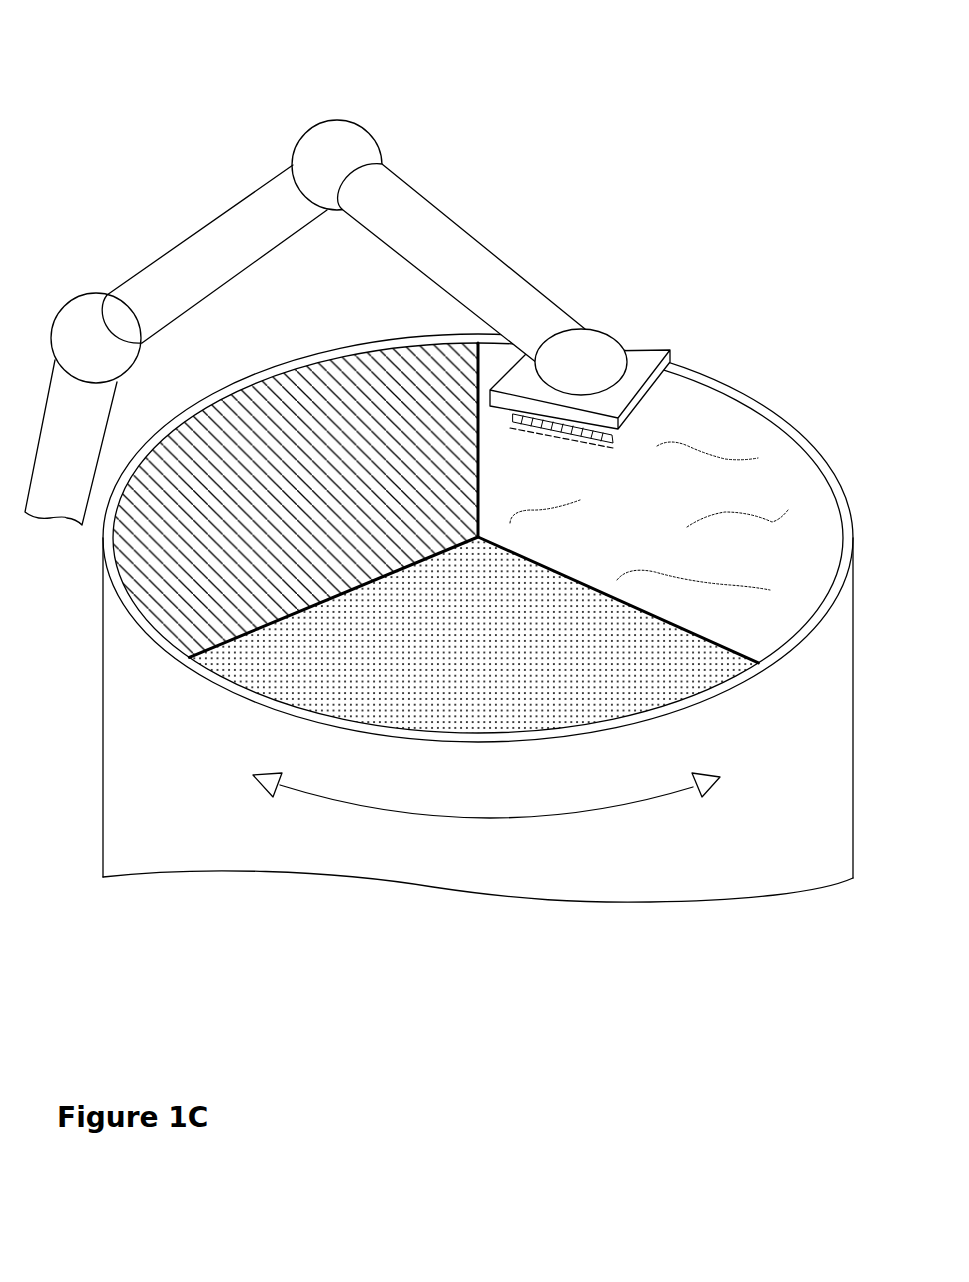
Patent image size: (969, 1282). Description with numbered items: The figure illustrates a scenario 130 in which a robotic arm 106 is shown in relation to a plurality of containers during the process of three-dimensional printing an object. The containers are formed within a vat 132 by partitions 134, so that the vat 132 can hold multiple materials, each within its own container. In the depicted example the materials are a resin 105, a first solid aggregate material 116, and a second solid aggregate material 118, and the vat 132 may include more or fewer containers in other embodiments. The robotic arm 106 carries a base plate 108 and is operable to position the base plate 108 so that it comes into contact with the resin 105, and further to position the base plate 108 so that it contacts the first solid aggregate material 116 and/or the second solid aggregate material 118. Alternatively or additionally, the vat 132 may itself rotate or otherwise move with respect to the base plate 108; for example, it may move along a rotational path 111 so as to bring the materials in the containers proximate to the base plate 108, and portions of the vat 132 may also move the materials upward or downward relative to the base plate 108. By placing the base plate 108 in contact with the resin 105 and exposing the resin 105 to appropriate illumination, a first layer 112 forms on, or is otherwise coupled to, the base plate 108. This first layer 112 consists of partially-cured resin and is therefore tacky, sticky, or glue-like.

The scenario 130 is at (491, 98).
The robotic arm 106 is at (152, 256).
The base plate 108 is at (661, 344).
The first layer 112 is at (557, 431).
The second solid aggregate material 118 is at (338, 364).
The first solid aggregate material 116 is at (568, 691).
The resin 105 is at (757, 436).
The partitions 134 is at (737, 653).
The rotational path 111 is at (447, 816).
The vat 132 is at (102, 783).